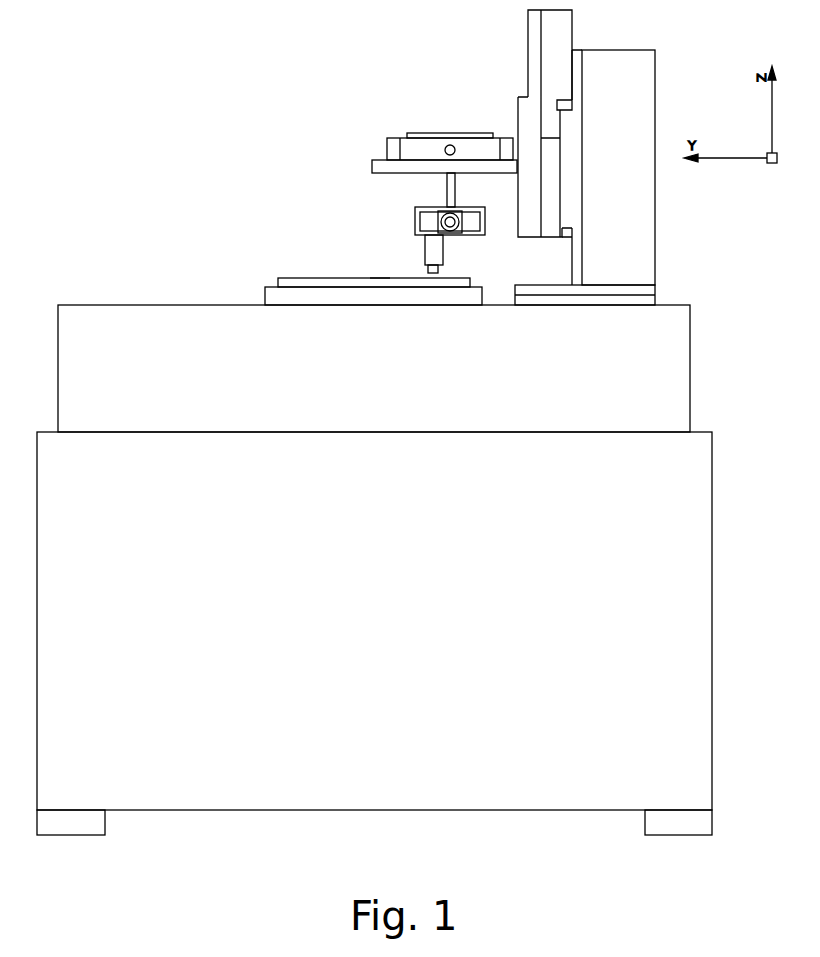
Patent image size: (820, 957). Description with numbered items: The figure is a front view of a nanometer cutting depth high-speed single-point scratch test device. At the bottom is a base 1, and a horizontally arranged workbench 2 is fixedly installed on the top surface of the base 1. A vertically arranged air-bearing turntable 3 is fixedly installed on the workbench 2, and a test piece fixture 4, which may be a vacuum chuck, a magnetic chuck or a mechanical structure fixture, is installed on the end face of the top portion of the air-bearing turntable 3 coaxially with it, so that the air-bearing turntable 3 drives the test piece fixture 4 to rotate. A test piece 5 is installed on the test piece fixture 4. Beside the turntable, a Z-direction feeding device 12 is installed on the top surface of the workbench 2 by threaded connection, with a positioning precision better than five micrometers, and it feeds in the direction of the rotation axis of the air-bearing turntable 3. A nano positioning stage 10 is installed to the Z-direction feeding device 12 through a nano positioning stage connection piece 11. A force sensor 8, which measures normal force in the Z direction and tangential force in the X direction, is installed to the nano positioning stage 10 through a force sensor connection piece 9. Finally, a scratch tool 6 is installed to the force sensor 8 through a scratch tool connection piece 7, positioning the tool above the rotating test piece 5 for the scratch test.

The base 1 is at (340, 560).
The workbench 2 is at (333, 378).
The air-bearing turntable 3 is at (372, 298).
The test piece fixture 4 is at (372, 283).
The test piece 5 is at (378, 273).
The scratch tool 6 is at (418, 267).
The scratch tool connection piece 7 is at (432, 250).
The force sensor 8 is at (423, 222).
The force sensor connection piece 9 is at (451, 190).
The nano positioning stage 10 is at (430, 150).
The nano positioning stage connection piece 11 is at (482, 165).
The Z-direction feeding device 12 is at (551, 72).